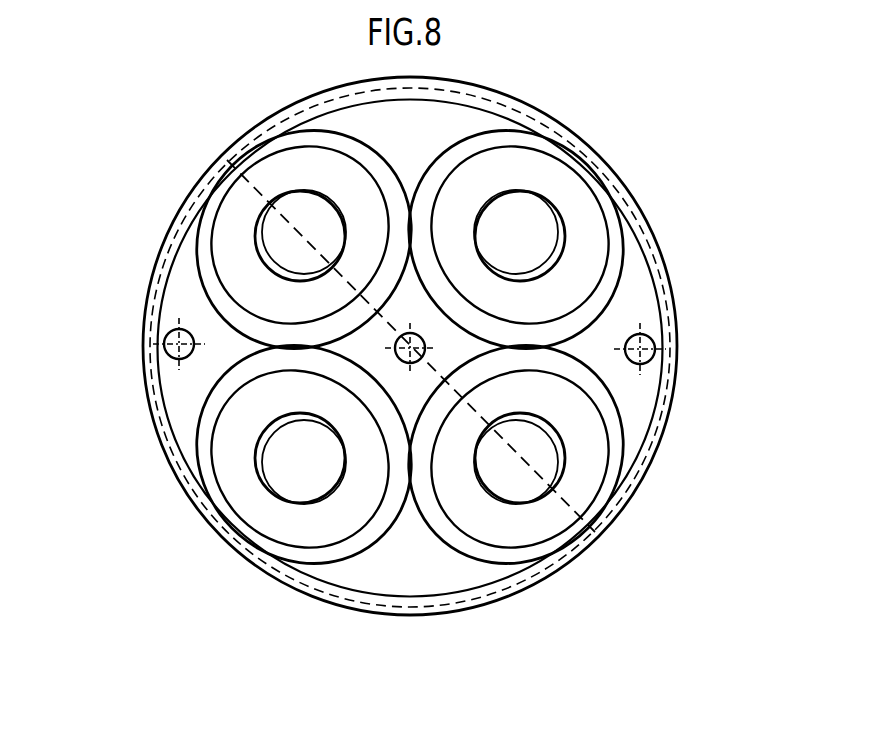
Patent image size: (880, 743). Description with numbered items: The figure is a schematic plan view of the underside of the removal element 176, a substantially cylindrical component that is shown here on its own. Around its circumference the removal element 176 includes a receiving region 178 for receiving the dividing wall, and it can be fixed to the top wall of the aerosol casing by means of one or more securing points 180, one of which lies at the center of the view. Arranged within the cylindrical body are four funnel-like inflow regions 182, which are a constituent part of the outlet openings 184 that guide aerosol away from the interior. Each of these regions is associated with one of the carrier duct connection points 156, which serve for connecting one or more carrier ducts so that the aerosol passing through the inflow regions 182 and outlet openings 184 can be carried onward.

The carrier duct connection points 156 is at (262, 212).
The removal element 176 is at (638, 392).
The receiving region 178 is at (668, 409).
The securing points 180 is at (400, 358).
The funnel-like inflow regions 182 is at (262, 256).
The outlet openings 184 is at (266, 288).